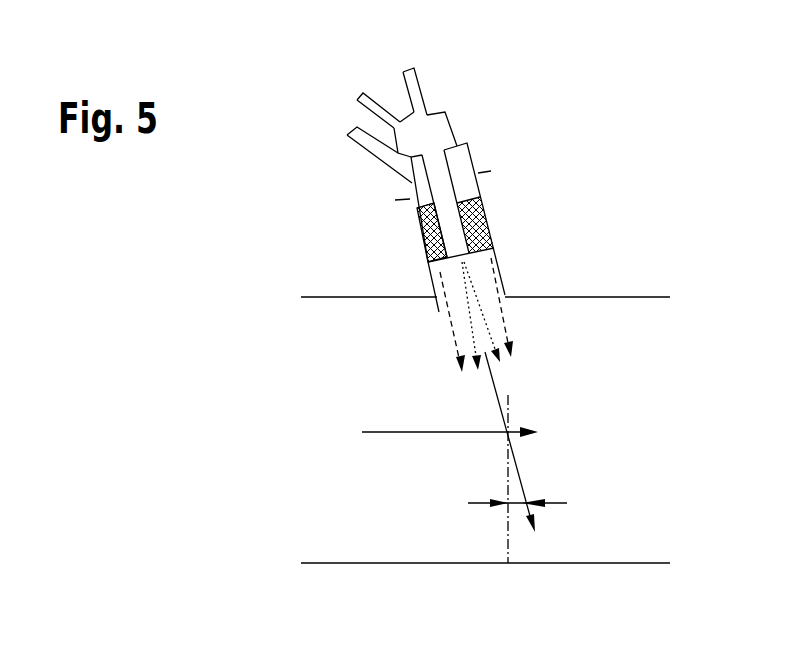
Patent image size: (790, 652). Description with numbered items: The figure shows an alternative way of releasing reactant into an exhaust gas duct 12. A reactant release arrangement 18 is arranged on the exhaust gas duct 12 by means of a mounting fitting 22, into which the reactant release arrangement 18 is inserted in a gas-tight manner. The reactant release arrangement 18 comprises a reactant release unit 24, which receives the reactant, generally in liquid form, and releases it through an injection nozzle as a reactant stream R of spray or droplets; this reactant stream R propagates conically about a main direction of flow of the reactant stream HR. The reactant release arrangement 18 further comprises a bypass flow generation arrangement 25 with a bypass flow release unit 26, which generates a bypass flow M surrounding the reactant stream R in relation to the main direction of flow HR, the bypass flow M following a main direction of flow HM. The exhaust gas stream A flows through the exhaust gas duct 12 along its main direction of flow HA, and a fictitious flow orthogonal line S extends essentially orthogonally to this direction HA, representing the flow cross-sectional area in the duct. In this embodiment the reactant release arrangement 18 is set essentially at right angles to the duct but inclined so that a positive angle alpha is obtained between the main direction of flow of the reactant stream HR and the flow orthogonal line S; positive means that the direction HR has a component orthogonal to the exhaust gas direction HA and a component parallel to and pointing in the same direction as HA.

The exhaust gas duct 12 is at (648, 297).
The reactant release arrangement 18 is at (441, 90).
The mounting fitting 22 is at (405, 226).
The reactant release unit 24 is at (402, 116).
The bypass flow generation arrangement 25 is at (484, 142).
The bypass flow release unit 26 is at (362, 124).
The reactant stream R is at (492, 260).
The bypass flow M is at (506, 328).
The main direction of flow of the reactant stream HR is at (553, 365).
The main direction of flow of the bypass flow HM is at (490, 250).
The main direction of flow of the exhaust gas stream HA is at (407, 421).
The exhaust gas stream A is at (383, 435).
The angle alpha is at (518, 497).
The flow orthogonal line S is at (507, 530).